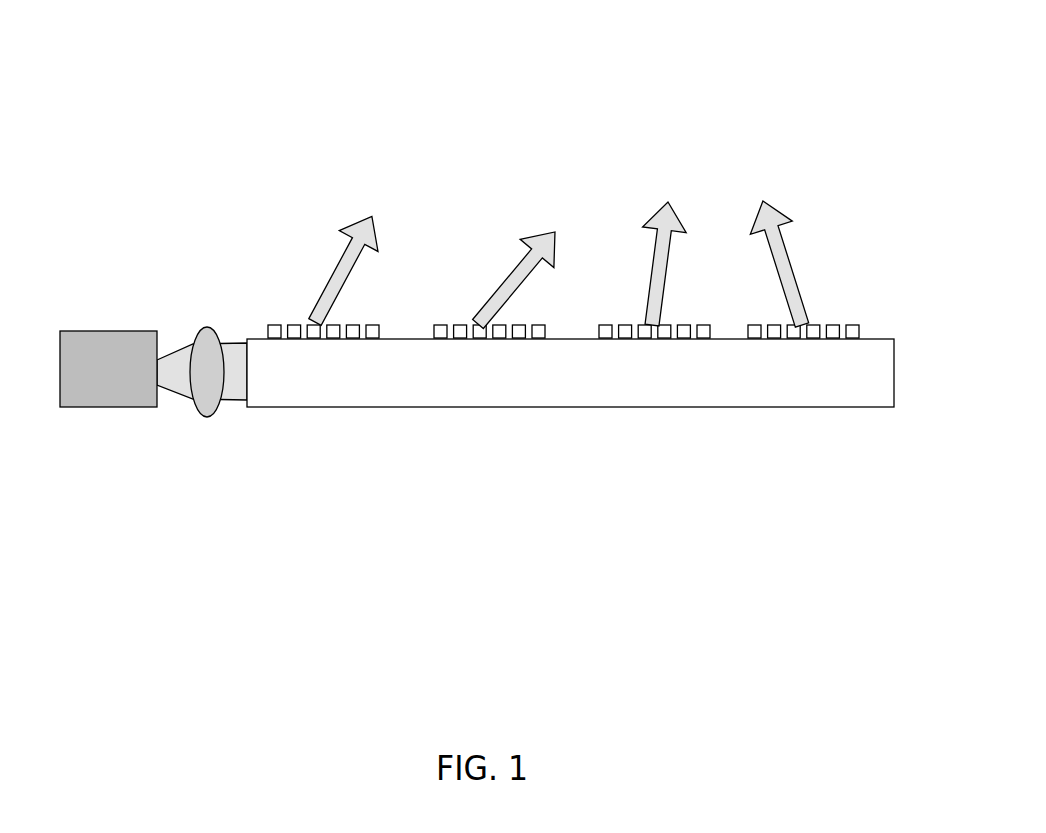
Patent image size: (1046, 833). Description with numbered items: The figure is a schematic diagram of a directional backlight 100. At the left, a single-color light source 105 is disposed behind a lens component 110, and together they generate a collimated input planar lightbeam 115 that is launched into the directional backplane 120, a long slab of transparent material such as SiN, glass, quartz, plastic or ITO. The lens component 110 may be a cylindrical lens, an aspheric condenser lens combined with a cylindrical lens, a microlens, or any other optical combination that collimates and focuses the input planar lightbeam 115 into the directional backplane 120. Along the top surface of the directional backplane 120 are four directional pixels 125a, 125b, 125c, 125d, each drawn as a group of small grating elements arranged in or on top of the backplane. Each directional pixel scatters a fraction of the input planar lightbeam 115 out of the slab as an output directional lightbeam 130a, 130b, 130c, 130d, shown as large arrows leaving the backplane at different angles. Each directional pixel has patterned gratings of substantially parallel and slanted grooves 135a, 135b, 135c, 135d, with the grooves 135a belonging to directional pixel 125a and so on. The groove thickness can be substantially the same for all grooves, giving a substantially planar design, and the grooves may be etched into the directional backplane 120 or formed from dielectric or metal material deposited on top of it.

The directional backlight 100 is at (469, 68).
The single-color light source 105 is at (93, 330).
The lens component 110 is at (205, 327).
The collimated input planar lightbeam 115 is at (232, 400).
The directional backplane 120 is at (362, 408).
The directional pixel 125a is at (373, 325).
The directional pixel 125b is at (541, 323).
The directional pixel 125c is at (682, 325).
The directional pixel 125d is at (813, 325).
The output directional lightbeam 130a is at (356, 220).
The output directional lightbeam 130b is at (536, 230).
The output directional lightbeam 130c is at (660, 200).
The output directional lightbeam 130d is at (772, 198).
The grooves 135a is at (295, 340).
The grooves 135b is at (477, 340).
The grooves 135c is at (647, 340).
The grooves 135d is at (777, 340).